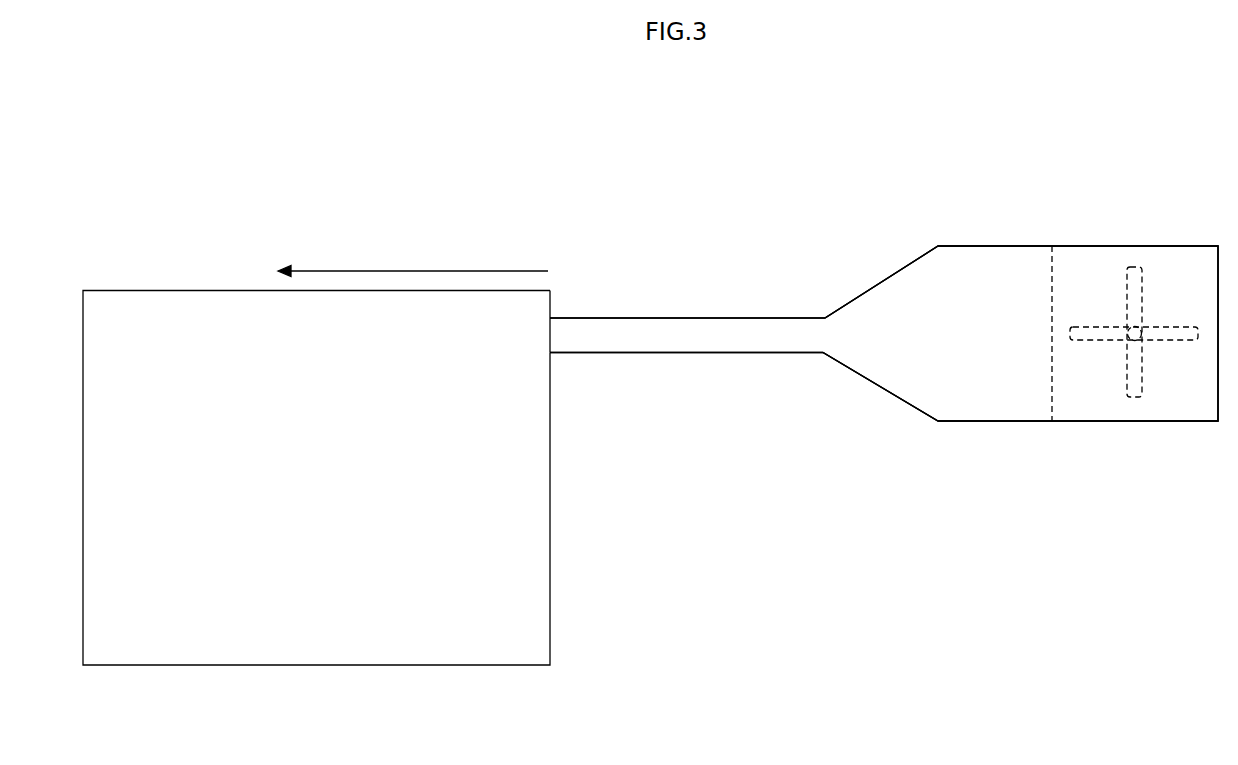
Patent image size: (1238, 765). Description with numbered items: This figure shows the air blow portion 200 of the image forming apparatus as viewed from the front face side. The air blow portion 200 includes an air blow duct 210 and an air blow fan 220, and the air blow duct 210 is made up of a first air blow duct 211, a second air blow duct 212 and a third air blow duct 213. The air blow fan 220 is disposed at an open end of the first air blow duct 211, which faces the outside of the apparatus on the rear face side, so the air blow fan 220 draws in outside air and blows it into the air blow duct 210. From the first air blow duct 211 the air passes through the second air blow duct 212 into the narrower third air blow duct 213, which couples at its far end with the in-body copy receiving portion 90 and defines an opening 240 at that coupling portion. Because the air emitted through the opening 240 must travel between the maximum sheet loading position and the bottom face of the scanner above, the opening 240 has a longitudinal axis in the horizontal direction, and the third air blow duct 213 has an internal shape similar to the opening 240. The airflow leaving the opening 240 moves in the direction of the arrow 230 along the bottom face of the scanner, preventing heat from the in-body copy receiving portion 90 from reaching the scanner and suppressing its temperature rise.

The in-body copy receiving portion 90 is at (495, 649).
The air blow portion 200 is at (803, 197).
The air blow duct 210 is at (866, 527).
The first air blow duct 211 is at (1084, 398).
The second air blow duct 212 is at (887, 368).
The third air blow duct 213 is at (730, 340).
The air blow fan 220 is at (1131, 270).
The arrow 230 is at (431, 270).
The opening 240 is at (550, 334).